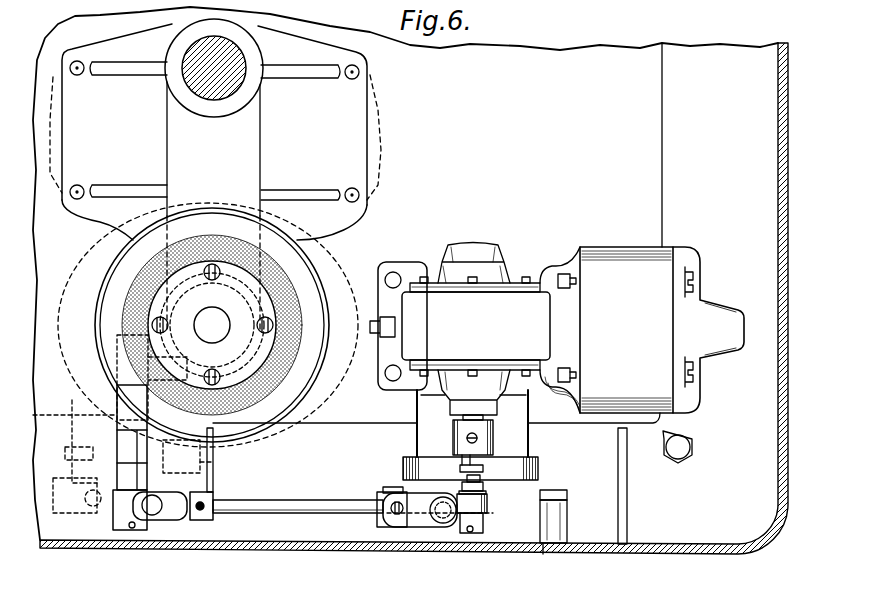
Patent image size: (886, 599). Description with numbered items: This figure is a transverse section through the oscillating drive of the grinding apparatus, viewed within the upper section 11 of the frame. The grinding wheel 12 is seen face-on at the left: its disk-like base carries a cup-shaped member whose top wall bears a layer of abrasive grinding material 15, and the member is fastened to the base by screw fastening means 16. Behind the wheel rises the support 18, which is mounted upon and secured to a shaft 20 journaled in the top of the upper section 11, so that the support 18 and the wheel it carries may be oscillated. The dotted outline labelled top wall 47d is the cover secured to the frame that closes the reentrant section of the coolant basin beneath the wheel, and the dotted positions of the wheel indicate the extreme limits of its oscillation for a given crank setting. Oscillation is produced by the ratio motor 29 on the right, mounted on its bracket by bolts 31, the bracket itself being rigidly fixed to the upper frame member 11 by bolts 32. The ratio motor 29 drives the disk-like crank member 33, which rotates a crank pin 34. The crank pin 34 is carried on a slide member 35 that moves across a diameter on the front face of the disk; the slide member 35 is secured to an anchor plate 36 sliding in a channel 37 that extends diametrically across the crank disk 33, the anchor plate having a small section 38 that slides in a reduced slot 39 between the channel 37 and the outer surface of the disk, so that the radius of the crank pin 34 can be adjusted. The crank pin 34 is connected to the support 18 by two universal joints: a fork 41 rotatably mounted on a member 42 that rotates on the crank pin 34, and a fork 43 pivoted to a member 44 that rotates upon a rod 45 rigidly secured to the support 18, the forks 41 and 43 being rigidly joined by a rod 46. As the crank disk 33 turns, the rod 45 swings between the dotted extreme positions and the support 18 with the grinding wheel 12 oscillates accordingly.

The upper section 11 is at (668, 555).
The grinding wheel 12 is at (297, 287).
The abrasive grinding material 15 is at (279, 394).
The screw fastening means 16 is at (204, 372).
The support 18 is at (360, 147).
The shaft 20 is at (208, 98).
The ratio motor 29 is at (608, 250).
The bolts 31 is at (392, 273).
The bolts 32 is at (390, 490).
The disk-like crank member 33 is at (538, 457).
The crank pin 34 is at (487, 513).
The slide member 35 is at (487, 490).
The anchor plate 36 is at (481, 446).
The channel 37 is at (466, 461).
The small section 38 is at (482, 477).
The reduced slot 39 is at (461, 475).
The fork 41 is at (425, 524).
The member 42 is at (473, 518).
The fork 43 is at (175, 519).
The member 44 is at (113, 510).
The rod 45 is at (72, 403).
The rod 46 is at (307, 500).
The top wall 47d is at (215, 203).